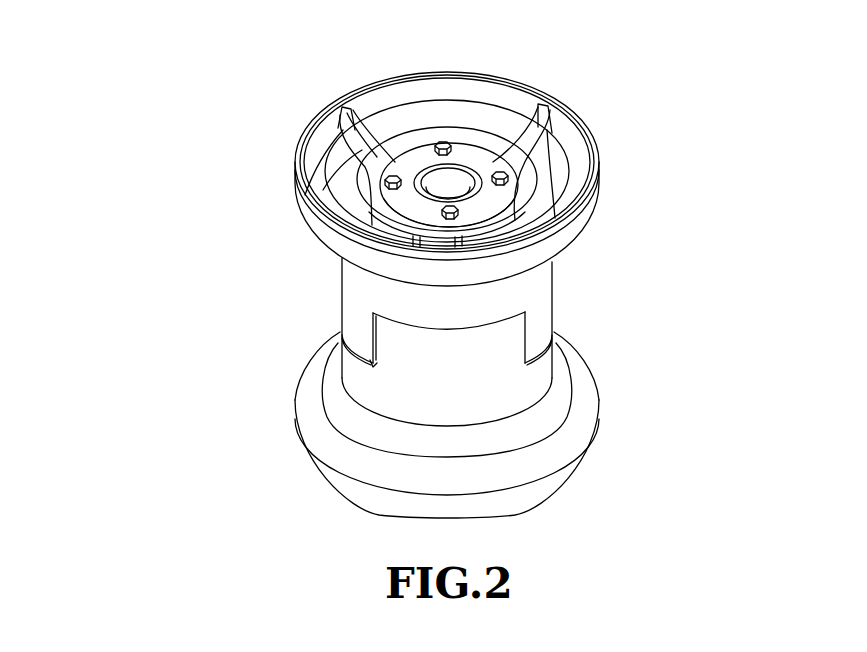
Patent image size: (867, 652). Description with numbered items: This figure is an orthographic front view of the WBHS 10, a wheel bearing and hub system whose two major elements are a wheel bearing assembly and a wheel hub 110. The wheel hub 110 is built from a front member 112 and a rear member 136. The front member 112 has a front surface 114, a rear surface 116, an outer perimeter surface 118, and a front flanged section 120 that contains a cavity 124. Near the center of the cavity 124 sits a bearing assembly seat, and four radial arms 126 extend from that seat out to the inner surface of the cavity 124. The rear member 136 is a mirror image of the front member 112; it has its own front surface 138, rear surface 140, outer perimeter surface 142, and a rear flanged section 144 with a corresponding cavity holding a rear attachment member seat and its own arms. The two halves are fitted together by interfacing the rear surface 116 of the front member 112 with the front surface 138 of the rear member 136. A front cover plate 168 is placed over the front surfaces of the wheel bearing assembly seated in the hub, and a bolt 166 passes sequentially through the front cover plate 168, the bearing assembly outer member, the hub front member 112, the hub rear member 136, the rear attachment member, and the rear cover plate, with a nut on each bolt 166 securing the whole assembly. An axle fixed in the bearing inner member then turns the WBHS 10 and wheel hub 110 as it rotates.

The WBHS 10 is at (123, 97).
The wheel hub 110 is at (676, 202).
The front member 112 is at (575, 112).
The front surface 114 is at (521, 162).
The rear surface 116 is at (543, 352).
The outer perimeter surface 118 is at (528, 292).
The front flanged section 120 is at (563, 230).
The cavity 124 is at (345, 188).
The radial arms 126 is at (355, 112).
The rear member 136 is at (330, 485).
The front surface 138 is at (410, 327).
The rear surface 140 is at (399, 437).
The outer perimeter surface 142 is at (478, 380).
The rear flanged section 144 is at (523, 465).
The bolt 166 is at (445, 140).
The front cover plate 168 is at (480, 162).